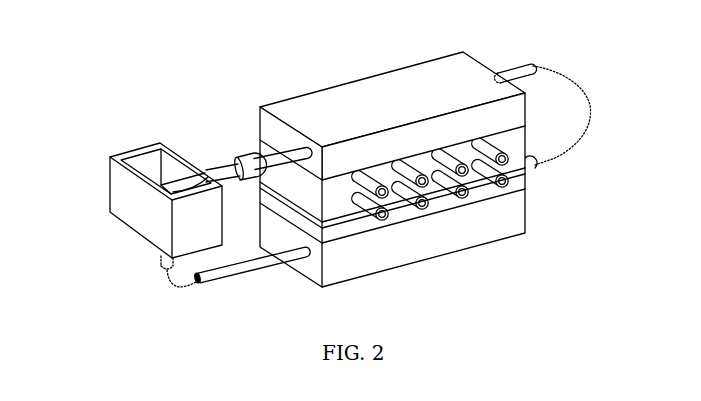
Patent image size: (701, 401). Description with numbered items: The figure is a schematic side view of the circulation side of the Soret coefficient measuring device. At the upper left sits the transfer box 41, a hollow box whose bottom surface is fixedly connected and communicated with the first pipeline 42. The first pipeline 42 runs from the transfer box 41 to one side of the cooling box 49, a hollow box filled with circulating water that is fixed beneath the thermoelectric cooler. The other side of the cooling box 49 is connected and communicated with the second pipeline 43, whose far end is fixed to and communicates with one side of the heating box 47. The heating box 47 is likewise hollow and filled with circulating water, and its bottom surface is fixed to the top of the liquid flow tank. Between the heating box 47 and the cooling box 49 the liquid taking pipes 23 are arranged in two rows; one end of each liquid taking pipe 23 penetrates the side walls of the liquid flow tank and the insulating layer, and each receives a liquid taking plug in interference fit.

The liquid taking pipes 23 is at (503, 160).
The transfer box 41 is at (125, 182).
The first pipeline 42 is at (273, 257).
The second pipeline 43 is at (527, 77).
The heating box 47 is at (443, 67).
The cooling box 49 is at (500, 223).